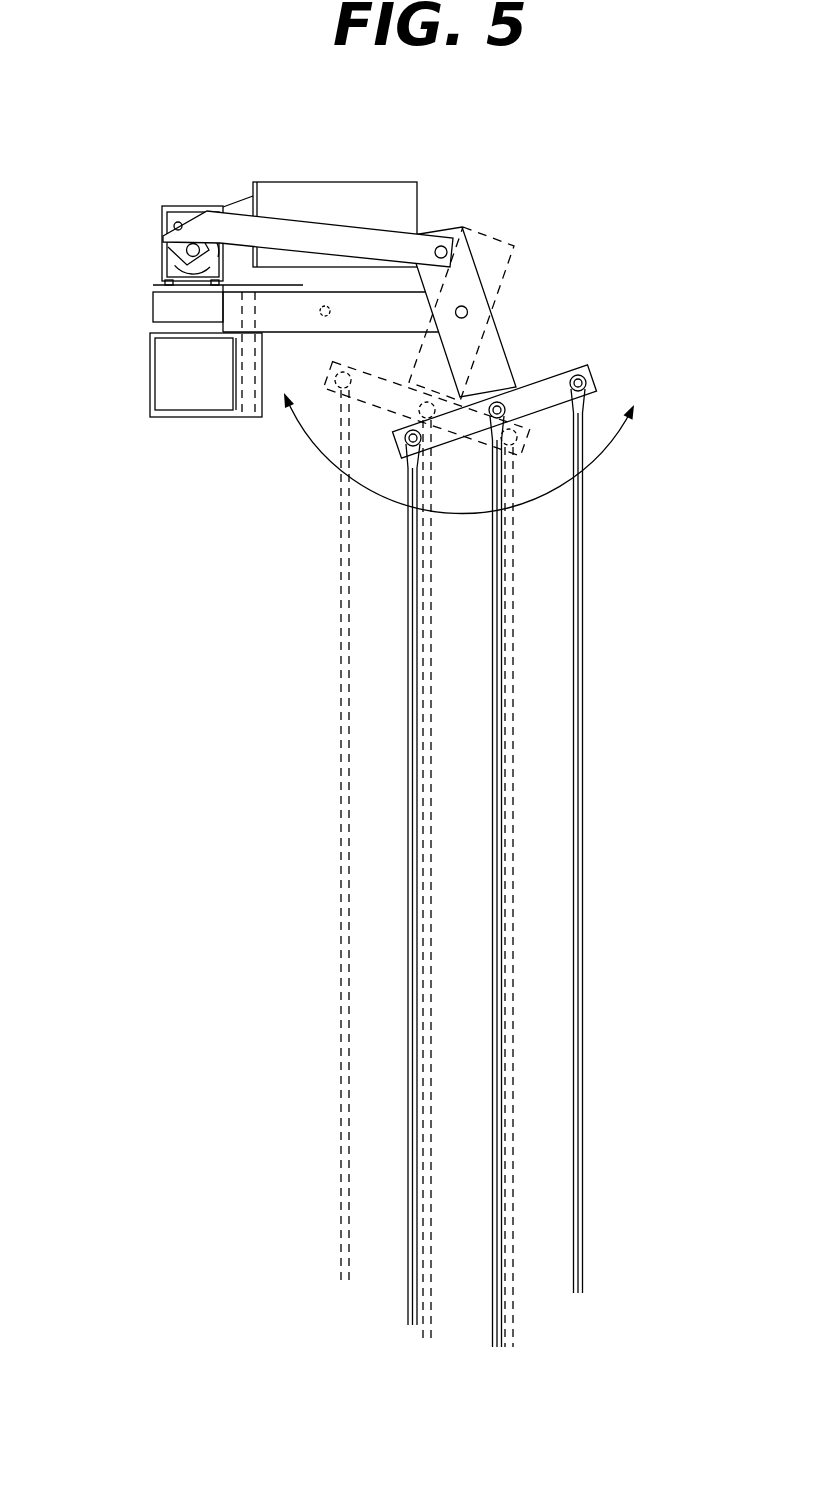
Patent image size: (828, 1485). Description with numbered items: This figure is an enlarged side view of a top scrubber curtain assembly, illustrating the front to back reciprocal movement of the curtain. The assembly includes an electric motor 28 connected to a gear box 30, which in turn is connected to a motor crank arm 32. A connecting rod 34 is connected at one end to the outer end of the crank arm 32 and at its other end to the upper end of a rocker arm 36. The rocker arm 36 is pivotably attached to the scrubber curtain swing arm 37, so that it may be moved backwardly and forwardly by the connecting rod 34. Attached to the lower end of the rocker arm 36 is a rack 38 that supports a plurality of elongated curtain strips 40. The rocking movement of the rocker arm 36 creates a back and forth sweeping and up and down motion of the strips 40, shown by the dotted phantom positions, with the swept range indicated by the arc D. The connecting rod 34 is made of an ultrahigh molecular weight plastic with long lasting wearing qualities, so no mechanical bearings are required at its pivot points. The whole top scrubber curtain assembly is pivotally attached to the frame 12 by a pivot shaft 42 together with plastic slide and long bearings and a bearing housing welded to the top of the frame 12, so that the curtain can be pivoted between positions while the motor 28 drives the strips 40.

The frame 12 is at (148, 381).
The electric motor 28 is at (408, 181).
The gear box 30 is at (188, 205).
The motor crank arm 32 is at (198, 240).
The connecting rod 34 is at (311, 220).
The rocker arm 36 is at (503, 339).
The scrubber curtain swing arm 37 is at (338, 334).
The rack 38 is at (594, 372).
The curtain strips 40 is at (584, 685).
The pivot shaft 42 is at (257, 315).
The swing direction D is at (562, 502).